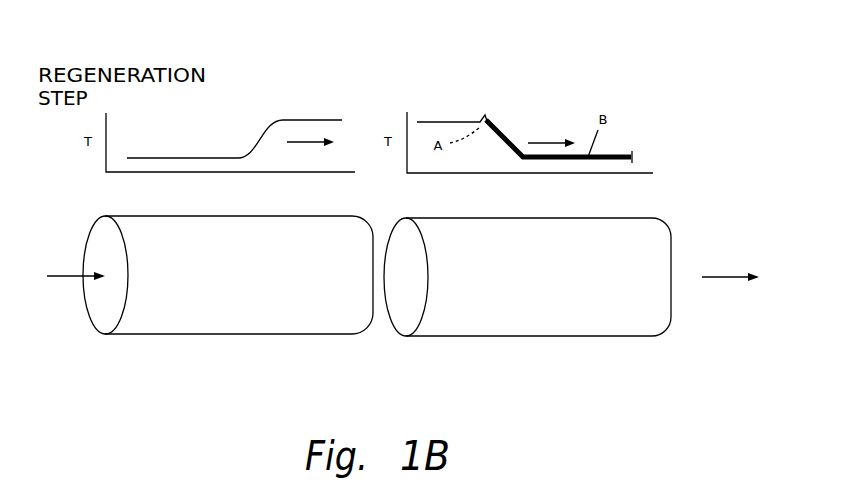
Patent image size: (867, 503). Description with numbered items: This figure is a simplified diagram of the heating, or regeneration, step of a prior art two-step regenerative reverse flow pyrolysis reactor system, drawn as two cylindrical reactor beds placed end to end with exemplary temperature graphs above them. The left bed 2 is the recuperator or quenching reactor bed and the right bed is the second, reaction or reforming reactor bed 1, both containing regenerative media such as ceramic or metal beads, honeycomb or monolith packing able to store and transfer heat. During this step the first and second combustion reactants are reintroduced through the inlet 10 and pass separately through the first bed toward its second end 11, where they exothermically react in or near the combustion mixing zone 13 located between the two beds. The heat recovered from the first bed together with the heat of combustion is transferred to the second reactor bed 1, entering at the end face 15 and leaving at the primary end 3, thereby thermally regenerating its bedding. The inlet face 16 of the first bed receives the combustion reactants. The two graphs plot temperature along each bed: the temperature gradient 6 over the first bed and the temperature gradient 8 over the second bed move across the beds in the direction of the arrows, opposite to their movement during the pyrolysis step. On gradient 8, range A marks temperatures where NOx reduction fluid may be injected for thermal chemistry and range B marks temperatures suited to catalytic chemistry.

The second reactor bed 1 is at (540, 290).
The second catalyst (particulate filter) unit 2 is at (242, 273).
The primary end 3 is at (672, 318).
The temperature gradient 6 is at (300, 118).
The temperature gradient 8 is at (445, 118).
The exhaust gas inlet flow 10 is at (75, 271).
The second end 11 is at (362, 325).
The combustion mixing zone 13 is at (378, 232).
The conduit 15 is at (406, 277).
The inlet end face of second unit 16 is at (105, 275).